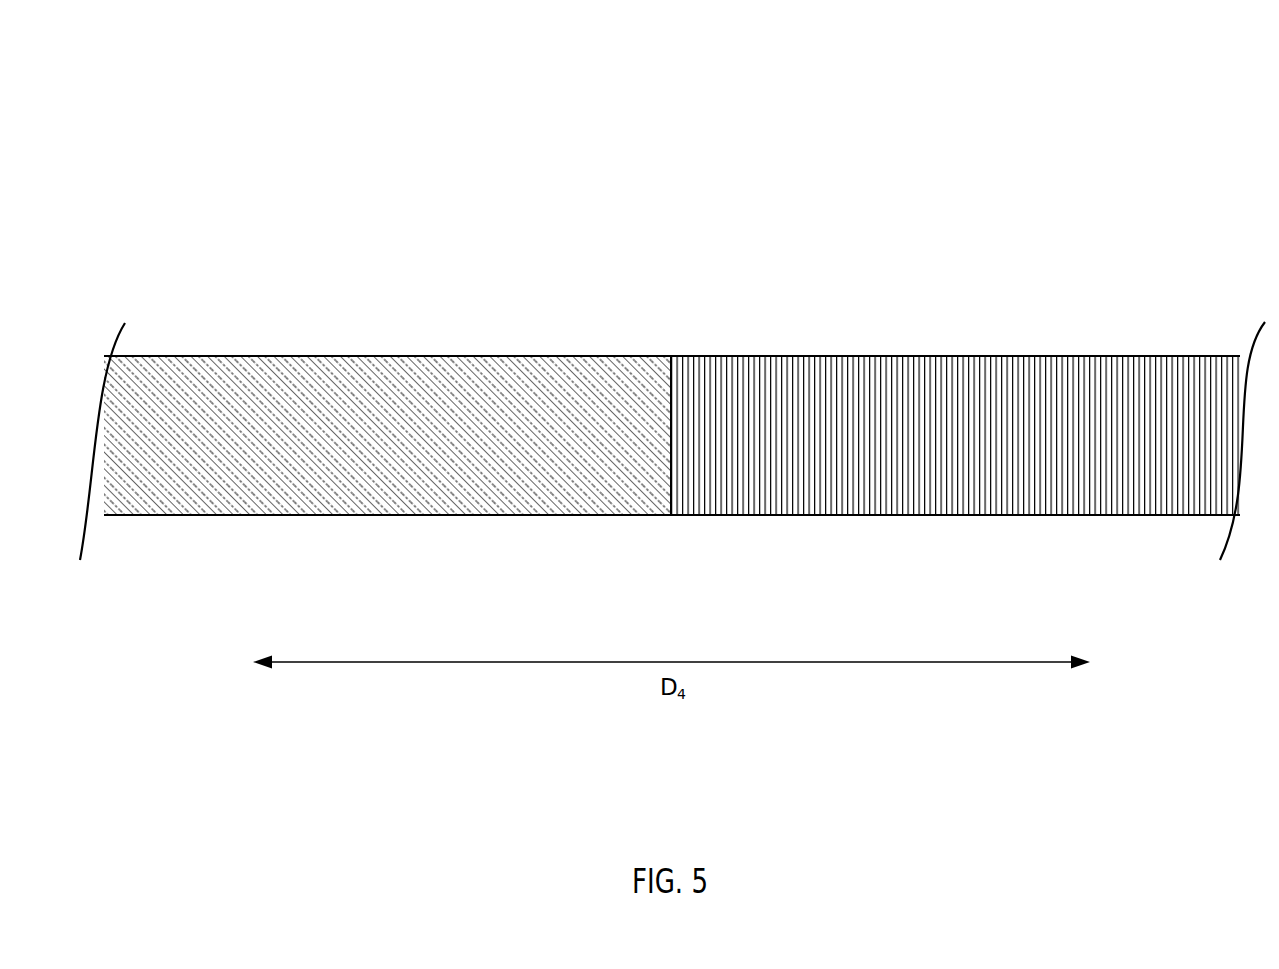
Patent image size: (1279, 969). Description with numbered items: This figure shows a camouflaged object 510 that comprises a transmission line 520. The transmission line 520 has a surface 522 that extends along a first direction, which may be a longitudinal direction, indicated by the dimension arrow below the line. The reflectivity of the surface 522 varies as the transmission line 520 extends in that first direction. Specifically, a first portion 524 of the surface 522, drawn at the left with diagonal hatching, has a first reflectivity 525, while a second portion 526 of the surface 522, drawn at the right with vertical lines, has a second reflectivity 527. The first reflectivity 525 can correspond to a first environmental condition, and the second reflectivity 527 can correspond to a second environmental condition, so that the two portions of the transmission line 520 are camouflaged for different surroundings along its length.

The camouflaged object 510 is at (686, 152).
The transmission line 520 is at (295, 407).
The surface 522 is at (632, 498).
The first portion 524 is at (423, 407).
The first reflectivity 525 is at (541, 390).
The second portion 526 is at (1022, 407).
The second reflectivity 527 is at (815, 390).